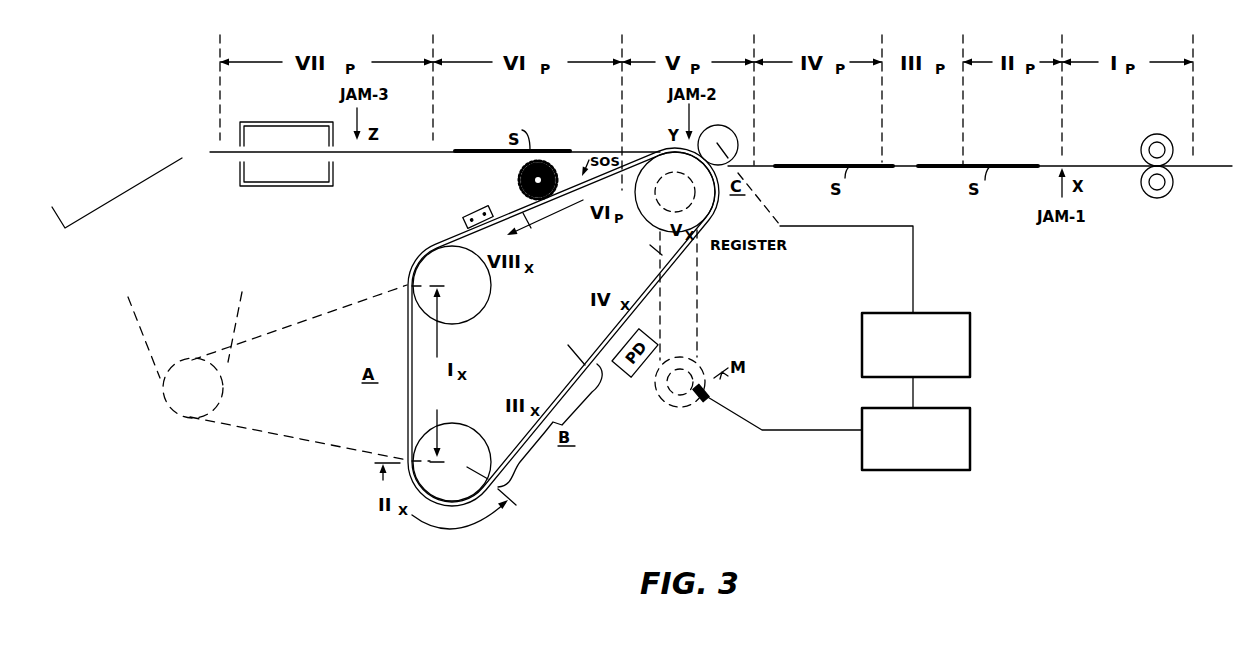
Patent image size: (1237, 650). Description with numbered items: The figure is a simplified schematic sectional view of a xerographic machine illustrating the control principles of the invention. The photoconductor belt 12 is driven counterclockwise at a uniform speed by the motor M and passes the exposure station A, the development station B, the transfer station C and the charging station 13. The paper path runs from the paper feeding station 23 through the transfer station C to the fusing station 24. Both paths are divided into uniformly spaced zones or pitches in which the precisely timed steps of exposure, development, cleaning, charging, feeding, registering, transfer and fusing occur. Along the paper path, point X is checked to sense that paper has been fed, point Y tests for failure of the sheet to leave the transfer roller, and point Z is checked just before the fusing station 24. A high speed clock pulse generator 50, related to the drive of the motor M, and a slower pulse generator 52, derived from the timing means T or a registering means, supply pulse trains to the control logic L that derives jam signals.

The photoconductor belt 12 is at (414, 269).
The charging station 13 is at (475, 212).
The paper feeding station 23 is at (1177, 174).
The fusing station 24 is at (315, 187).
The high speed clock pulse generator 50 is at (703, 402).
The pulse generator 52 is at (932, 313).